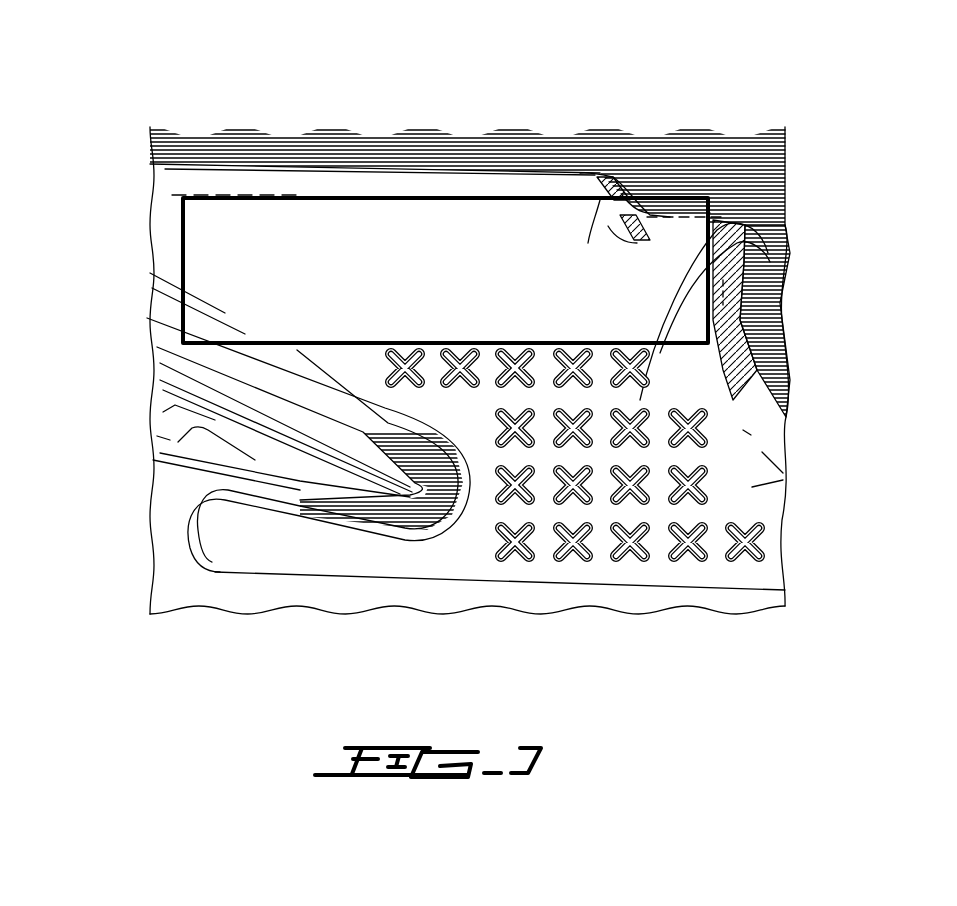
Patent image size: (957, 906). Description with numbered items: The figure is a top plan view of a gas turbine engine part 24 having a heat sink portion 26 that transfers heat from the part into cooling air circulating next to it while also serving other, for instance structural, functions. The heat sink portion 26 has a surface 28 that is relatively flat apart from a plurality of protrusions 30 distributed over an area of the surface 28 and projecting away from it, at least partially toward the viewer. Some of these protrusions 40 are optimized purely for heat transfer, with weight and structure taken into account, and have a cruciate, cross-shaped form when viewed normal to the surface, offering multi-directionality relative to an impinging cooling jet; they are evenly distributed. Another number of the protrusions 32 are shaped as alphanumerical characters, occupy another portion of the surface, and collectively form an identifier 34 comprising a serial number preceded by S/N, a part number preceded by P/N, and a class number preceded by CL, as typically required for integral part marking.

The gas turbine engine part 24 is at (696, 163).
The heat sink portion 26 is at (596, 243).
The surface 28 is at (750, 487).
The protrusions 30 is at (642, 440).
The protrusions forming alphanumerical characters 32 is at (428, 288).
The identifier 34 is at (345, 196).
The cruciate protrusions 40 is at (673, 560).